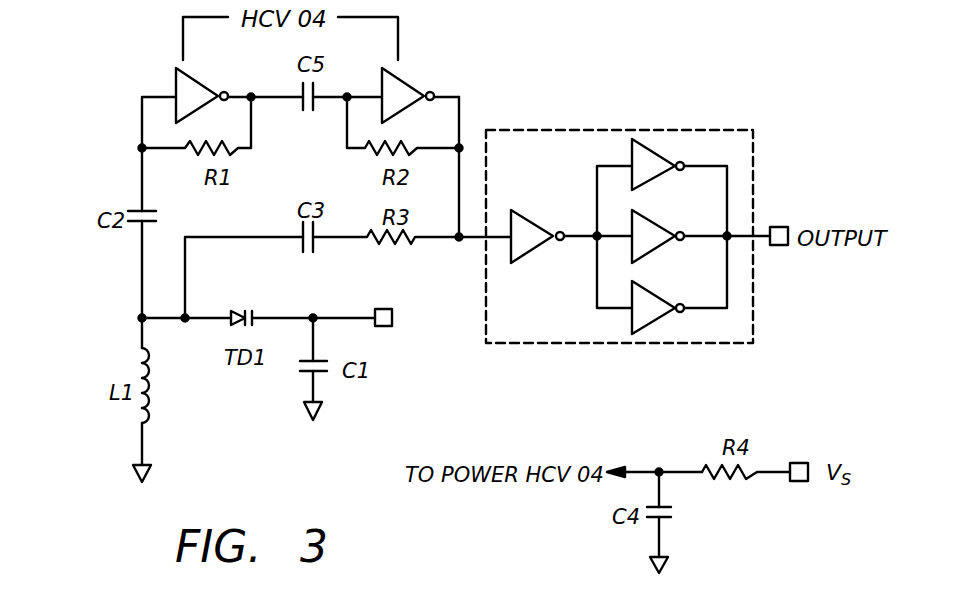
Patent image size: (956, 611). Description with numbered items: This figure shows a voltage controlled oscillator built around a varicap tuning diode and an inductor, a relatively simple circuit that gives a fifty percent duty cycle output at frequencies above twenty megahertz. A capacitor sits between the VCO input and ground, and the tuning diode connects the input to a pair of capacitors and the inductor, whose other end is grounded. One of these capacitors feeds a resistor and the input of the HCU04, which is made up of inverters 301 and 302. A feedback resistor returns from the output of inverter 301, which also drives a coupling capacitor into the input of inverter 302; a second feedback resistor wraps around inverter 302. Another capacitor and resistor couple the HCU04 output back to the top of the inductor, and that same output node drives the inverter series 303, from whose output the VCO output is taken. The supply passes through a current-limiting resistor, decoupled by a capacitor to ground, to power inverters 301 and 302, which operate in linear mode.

The inverter 301 is at (166, 82).
The inverter 302 is at (439, 82).
The inverter series 303 is at (628, 219).